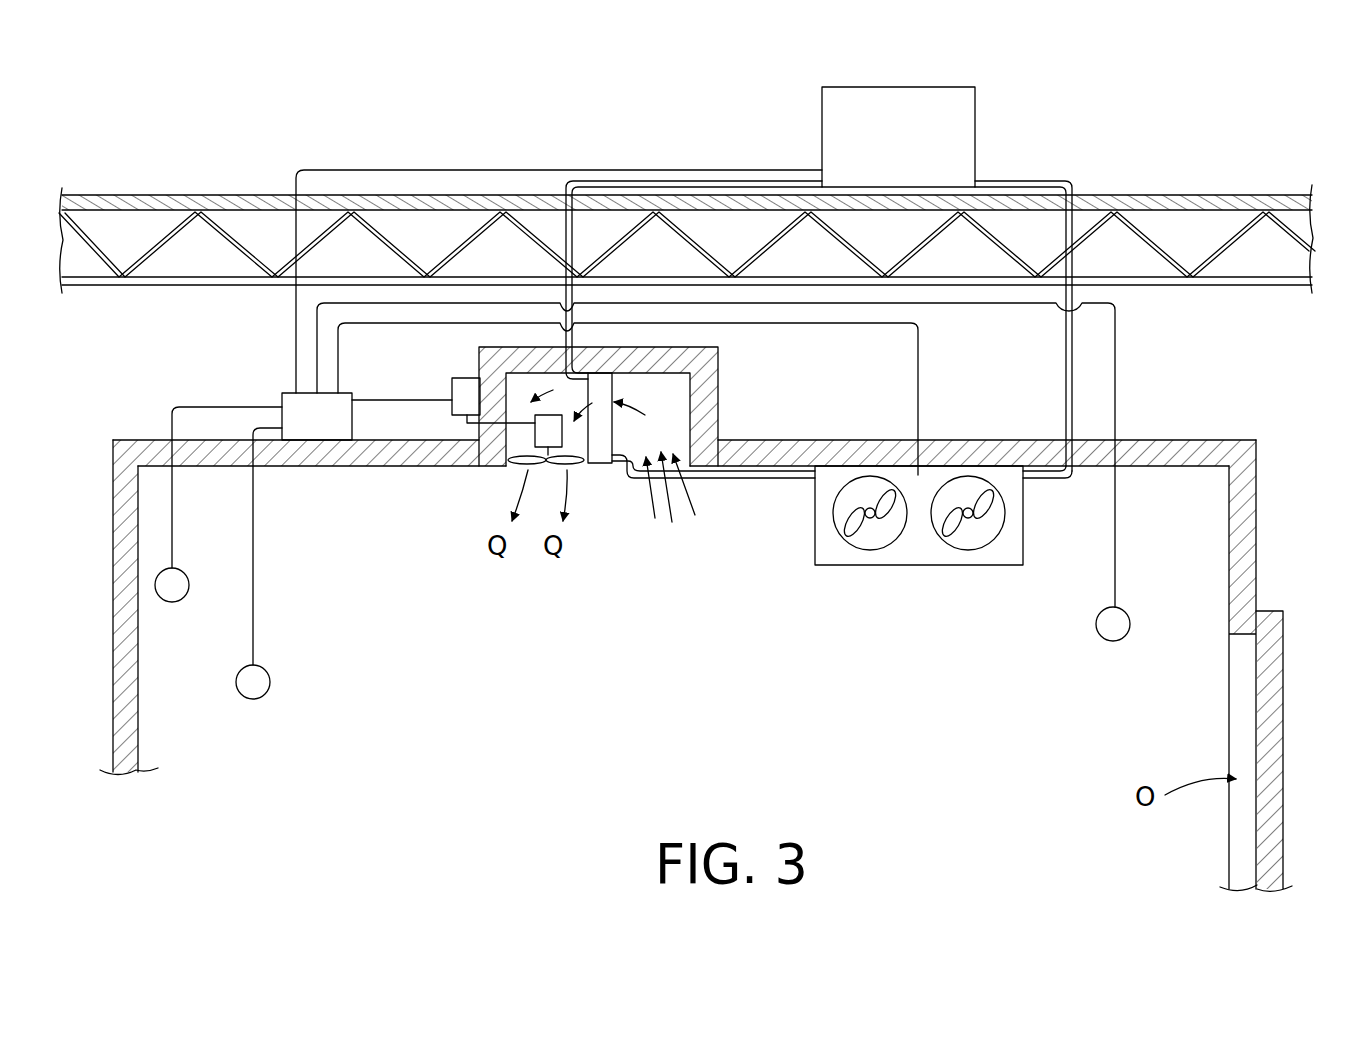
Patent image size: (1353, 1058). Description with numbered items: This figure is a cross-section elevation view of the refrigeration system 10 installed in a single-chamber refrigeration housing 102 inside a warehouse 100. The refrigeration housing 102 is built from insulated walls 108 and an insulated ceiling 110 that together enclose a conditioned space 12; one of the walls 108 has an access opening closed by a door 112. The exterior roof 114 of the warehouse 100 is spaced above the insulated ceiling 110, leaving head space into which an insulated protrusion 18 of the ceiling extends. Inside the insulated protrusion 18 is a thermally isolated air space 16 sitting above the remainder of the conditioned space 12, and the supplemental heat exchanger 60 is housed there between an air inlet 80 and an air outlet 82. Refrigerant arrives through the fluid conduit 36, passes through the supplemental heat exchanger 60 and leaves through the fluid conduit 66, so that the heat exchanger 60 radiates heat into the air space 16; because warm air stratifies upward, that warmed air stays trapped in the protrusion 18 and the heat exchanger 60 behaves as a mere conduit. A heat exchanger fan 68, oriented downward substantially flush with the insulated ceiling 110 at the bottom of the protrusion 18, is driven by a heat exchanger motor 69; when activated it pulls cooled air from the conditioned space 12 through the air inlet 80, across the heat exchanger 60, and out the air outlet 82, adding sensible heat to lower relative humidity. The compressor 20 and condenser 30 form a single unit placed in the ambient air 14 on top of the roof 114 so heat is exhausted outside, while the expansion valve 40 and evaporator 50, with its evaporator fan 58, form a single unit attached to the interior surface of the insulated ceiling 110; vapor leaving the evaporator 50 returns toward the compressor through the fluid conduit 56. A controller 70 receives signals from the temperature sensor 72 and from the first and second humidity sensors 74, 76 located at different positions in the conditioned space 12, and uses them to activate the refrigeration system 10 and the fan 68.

The refrigeration system 10 is at (1095, 110).
The conditioned space 12 is at (711, 643).
The ambient air 14 is at (705, 113).
The thermally isolated air space 16 is at (670, 415).
The insulated protrusion 18 is at (713, 375).
The compressor 20 is at (942, 122).
The condenser 30 is at (965, 88).
The fluid conduit 36 is at (555, 222).
The expansion valve 40 is at (691, 471).
The evaporator 50 is at (691, 471).
The fluid conduit 56 is at (1075, 190).
The evaporator fan 58 is at (860, 536).
The supplemental heat exchanger 60 is at (612, 373).
The fluid conduit 66 is at (733, 481).
The heat exchanger fan 68 is at (522, 487).
The heat exchanger motor 69 is at (536, 436).
The controller 70 is at (328, 432).
The temperature sensor 72 is at (265, 695).
The first humidity sensor 74 is at (182, 600).
The second humidity sensor 76 is at (1122, 642).
The air inlet 80 is at (671, 505).
The air outlet 82 is at (506, 471).
The warehouse 100 is at (102, 163).
The refrigeration housing 102 is at (100, 426).
The insulated walls 108 is at (128, 750).
The insulated ceiling 110 is at (665, 557).
The door 112 is at (1275, 686).
The roof 114 is at (1193, 197).